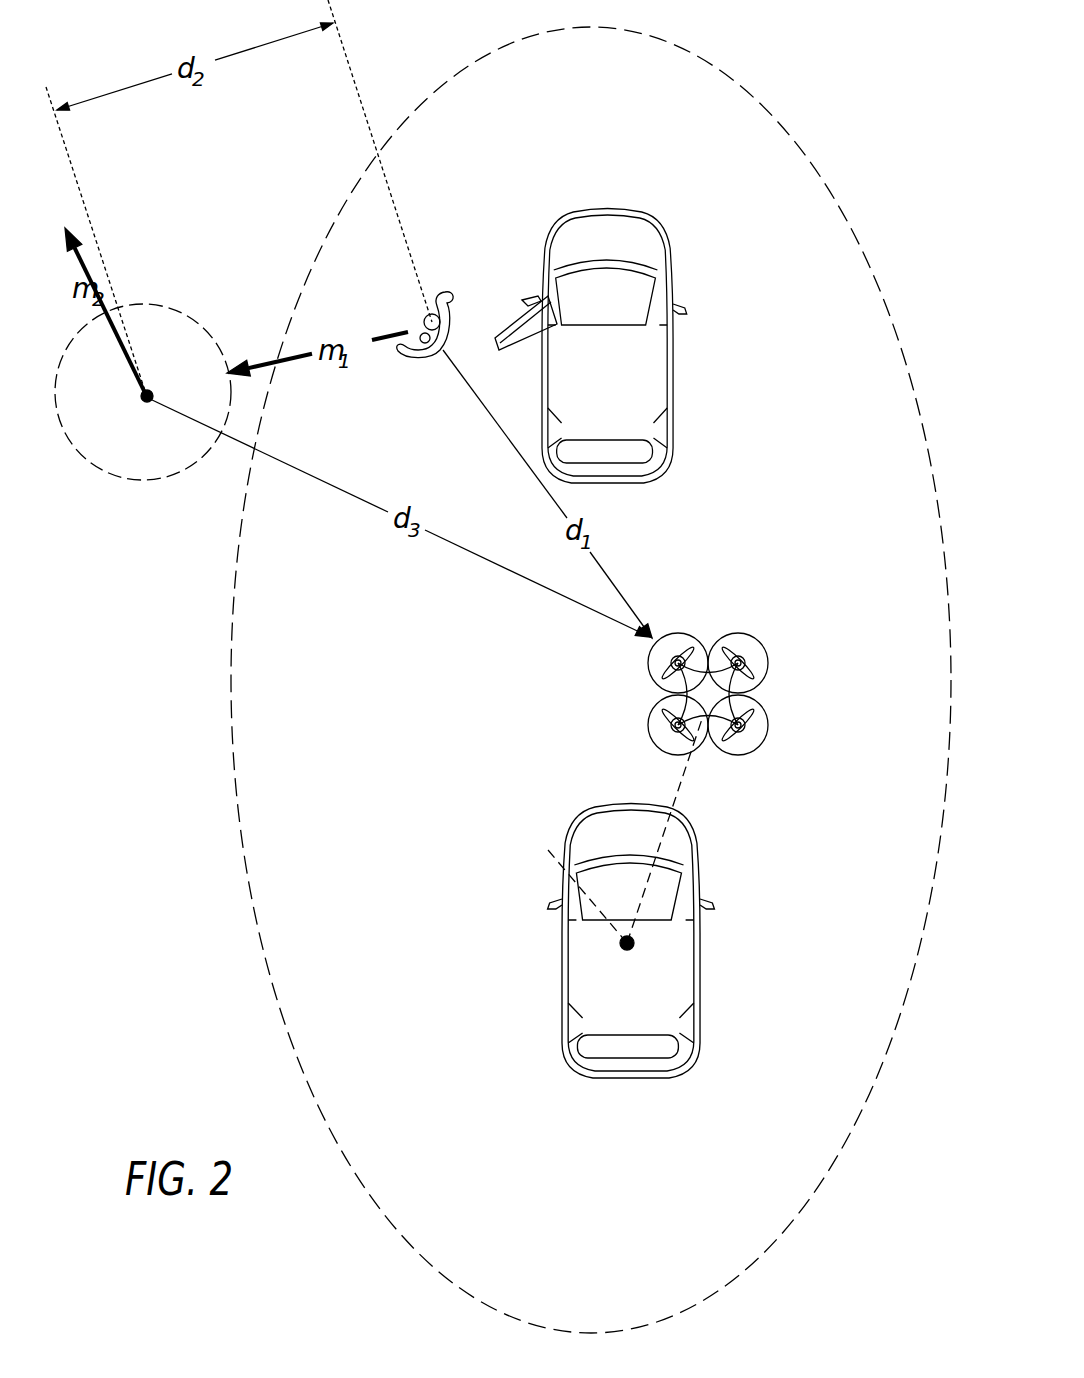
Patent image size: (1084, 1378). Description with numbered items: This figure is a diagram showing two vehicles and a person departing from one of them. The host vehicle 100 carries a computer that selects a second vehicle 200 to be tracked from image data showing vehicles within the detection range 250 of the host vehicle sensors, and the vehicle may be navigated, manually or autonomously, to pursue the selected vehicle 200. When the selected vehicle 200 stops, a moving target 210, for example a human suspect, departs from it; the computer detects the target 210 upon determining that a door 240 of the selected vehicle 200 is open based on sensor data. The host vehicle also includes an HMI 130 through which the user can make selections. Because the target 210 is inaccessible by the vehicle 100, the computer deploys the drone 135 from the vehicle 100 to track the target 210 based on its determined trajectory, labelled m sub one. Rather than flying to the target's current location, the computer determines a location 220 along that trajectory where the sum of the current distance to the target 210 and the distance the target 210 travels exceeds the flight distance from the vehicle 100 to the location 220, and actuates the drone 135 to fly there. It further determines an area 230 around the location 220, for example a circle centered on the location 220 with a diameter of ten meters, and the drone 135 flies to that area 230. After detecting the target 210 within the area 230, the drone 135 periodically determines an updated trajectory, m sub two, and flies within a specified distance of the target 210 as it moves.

The host vehicle 100 is at (635, 855).
The HMI 130 is at (625, 950).
The drone 135 is at (737, 610).
The second vehicle 200 is at (613, 397).
The moving target 210 is at (444, 296).
The location 220 is at (149, 389).
The area 230 is at (151, 482).
The door 240 is at (510, 318).
The detection range 250 is at (785, 125).